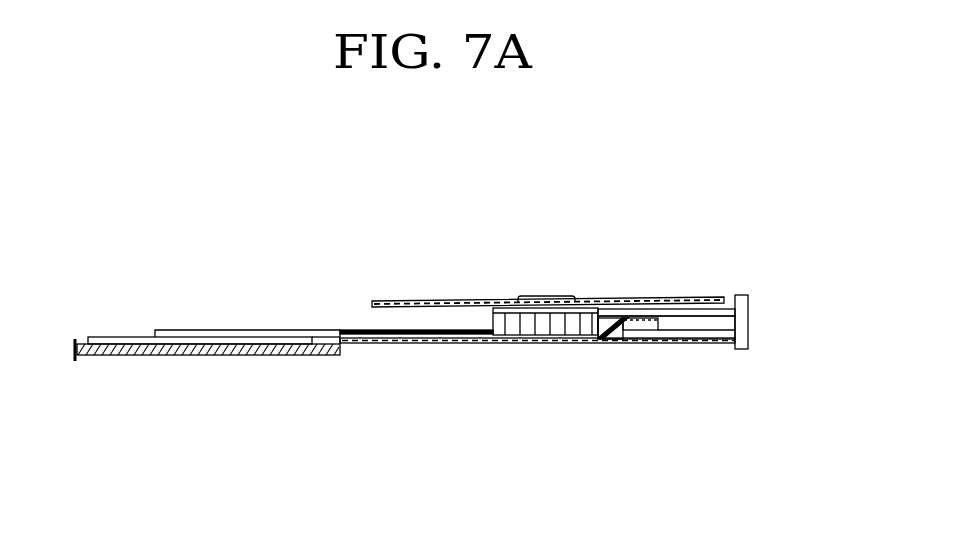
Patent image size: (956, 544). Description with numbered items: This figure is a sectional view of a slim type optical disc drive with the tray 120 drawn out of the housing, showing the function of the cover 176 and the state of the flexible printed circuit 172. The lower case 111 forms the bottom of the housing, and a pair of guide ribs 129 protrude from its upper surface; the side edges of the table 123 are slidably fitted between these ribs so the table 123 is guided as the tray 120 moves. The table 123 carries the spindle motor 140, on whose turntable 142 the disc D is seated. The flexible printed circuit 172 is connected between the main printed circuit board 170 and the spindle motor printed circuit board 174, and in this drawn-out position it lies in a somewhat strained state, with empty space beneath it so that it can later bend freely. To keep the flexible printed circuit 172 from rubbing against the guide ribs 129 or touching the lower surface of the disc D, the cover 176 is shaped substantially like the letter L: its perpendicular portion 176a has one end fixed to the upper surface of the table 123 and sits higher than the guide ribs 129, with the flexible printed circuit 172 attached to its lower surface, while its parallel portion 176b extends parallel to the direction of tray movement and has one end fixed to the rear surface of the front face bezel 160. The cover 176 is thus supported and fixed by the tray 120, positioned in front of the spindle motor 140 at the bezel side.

The lower case 111 is at (148, 356).
The guide ribs 129 is at (175, 336).
The main printed circuit board 170 is at (271, 330).
The flexible printed circuit 172 is at (437, 345).
The table 123 is at (672, 343).
The disc D is at (413, 300).
The spindle motor 140 is at (510, 308).
The turntable 142 is at (592, 298).
The cover 176 is at (674, 265).
The perpendicular portion 176a is at (634, 310).
The parallel portion 176b is at (716, 310).
The spindle motor printed circuit board 174 is at (635, 333).
The front face bezel 160 is at (748, 325).
The tray 120 is at (700, 360).